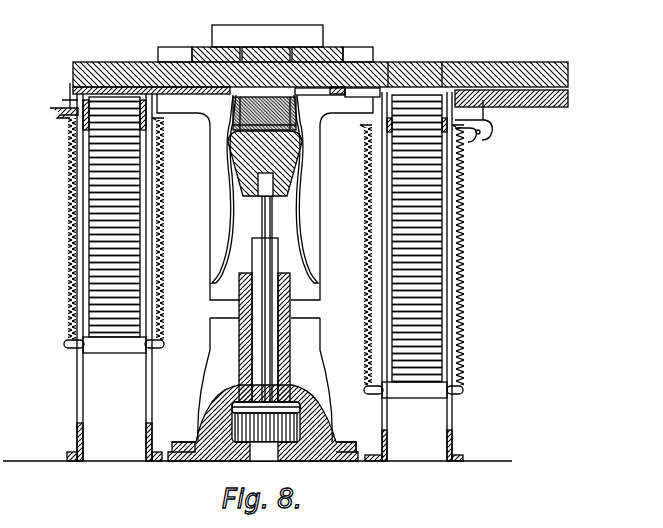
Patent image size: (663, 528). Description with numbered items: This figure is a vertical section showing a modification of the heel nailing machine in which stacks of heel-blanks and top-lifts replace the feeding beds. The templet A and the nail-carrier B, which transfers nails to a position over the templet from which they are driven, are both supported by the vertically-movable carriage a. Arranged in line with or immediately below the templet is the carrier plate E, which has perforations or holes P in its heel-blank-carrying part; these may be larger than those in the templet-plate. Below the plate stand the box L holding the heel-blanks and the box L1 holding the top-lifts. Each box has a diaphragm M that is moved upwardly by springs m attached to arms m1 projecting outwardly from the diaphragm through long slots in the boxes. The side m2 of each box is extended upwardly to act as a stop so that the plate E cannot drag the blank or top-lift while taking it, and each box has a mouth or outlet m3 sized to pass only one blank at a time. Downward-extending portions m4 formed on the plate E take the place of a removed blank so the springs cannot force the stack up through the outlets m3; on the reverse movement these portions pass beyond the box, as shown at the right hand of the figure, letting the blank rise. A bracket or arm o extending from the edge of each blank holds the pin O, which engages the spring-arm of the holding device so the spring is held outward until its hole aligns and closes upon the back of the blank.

The plate E is at (320, 63).
The nail-carrier B is at (267, 23).
The templet A is at (338, 48).
The mouth or outlet m3 is at (166, 62).
The perforations or holes P is at (447, 62).
The downward-extending portions m4 is at (190, 95).
The carriage a is at (332, 269).
The pin O is at (492, 118).
The side of box m2 is at (510, 140).
The bracket or arm o is at (481, 139).
The springs m is at (68, 212).
The box holding the top-lifts L1 is at (78, 365).
The box holding the heel-blanks L is at (452, 410).
The diaphragm M is at (265, 247).
The arms m1 is at (482, 392).